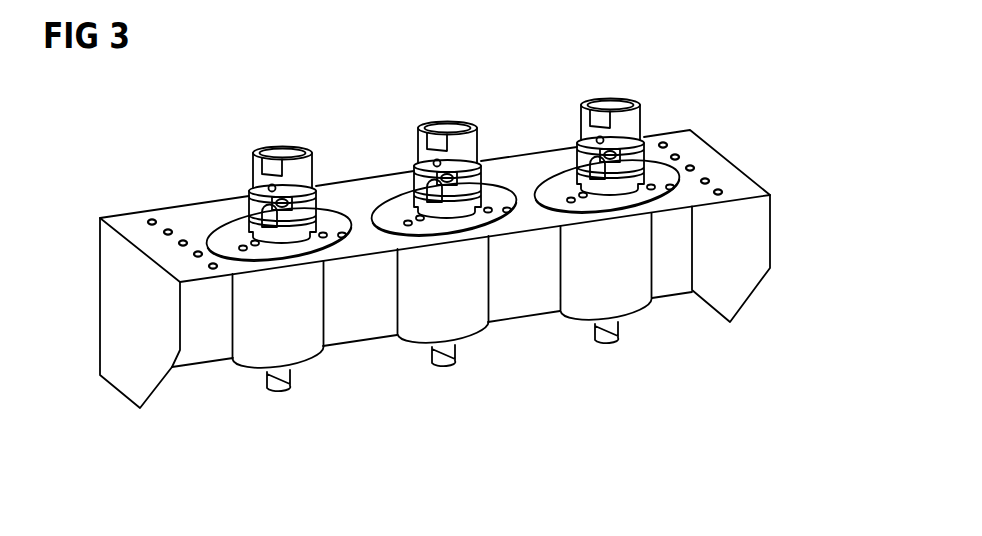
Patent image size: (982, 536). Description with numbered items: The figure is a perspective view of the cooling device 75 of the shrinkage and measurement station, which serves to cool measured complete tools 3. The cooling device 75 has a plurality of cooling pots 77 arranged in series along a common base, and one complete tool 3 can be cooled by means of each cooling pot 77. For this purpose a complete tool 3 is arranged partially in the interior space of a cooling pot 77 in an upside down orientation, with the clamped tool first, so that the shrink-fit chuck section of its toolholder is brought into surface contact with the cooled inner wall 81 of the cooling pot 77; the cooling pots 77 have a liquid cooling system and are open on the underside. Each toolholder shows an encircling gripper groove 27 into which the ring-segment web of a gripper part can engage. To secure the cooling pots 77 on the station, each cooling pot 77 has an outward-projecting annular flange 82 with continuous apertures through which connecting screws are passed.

The complete tool 3 is at (262, 178).
The gripper groove 27 is at (320, 187).
The cooling device 75 is at (745, 111).
The cooling pot 77 is at (310, 323).
The cooled inner wall 81 is at (252, 240).
The annular flange 82 is at (273, 250).